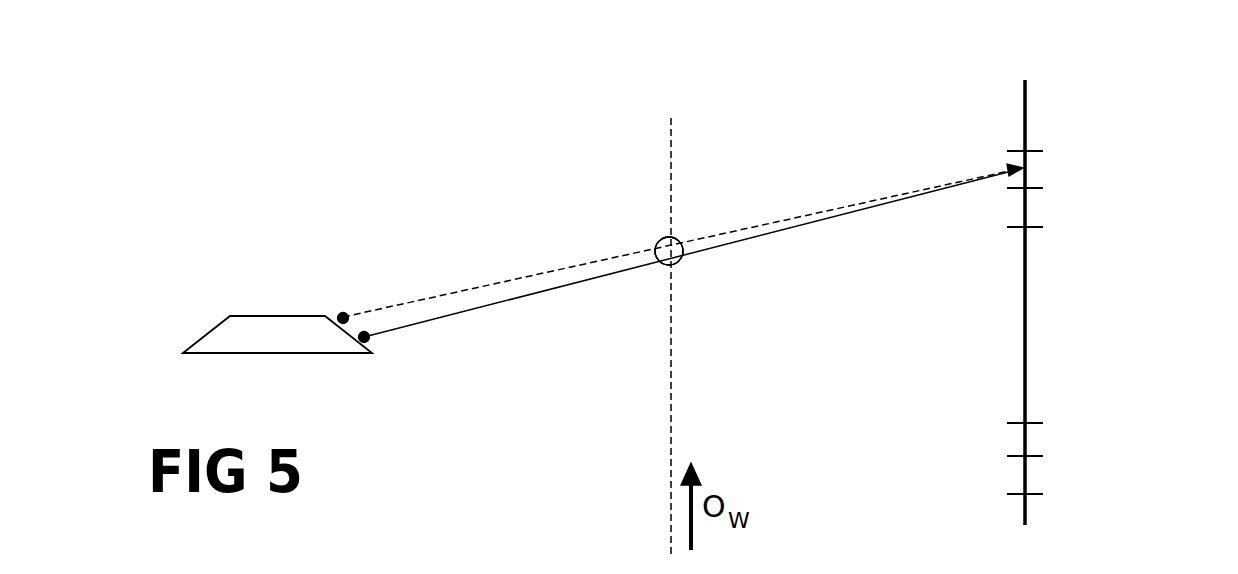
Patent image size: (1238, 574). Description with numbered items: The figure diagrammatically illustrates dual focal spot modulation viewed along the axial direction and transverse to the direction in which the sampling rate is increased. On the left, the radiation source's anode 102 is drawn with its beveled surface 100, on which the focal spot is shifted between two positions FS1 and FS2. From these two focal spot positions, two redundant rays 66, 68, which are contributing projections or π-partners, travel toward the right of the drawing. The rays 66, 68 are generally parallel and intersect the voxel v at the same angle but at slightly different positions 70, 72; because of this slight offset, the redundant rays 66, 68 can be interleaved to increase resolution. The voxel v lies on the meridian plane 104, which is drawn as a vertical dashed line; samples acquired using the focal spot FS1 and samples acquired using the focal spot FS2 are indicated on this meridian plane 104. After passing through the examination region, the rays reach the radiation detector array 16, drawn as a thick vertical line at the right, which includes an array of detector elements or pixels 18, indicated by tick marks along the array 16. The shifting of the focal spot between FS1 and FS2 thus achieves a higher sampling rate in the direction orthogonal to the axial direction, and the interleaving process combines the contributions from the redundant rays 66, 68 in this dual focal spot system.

The beveled surface 100 is at (207, 334).
The anode 102 is at (248, 262).
The focal spot position FS1 is at (370, 338).
The focal spot position FS2 is at (343, 312).
The redundant ray 66 is at (563, 270).
The redundant ray 68 is at (547, 290).
The intersection position 70 is at (682, 242).
The intersection position 72 is at (658, 261).
The voxel v is at (683, 258).
The meridian plane 104 is at (671, 142).
The radiation detector array 16 is at (1028, 350).
The detector elements 18 is at (1038, 199).